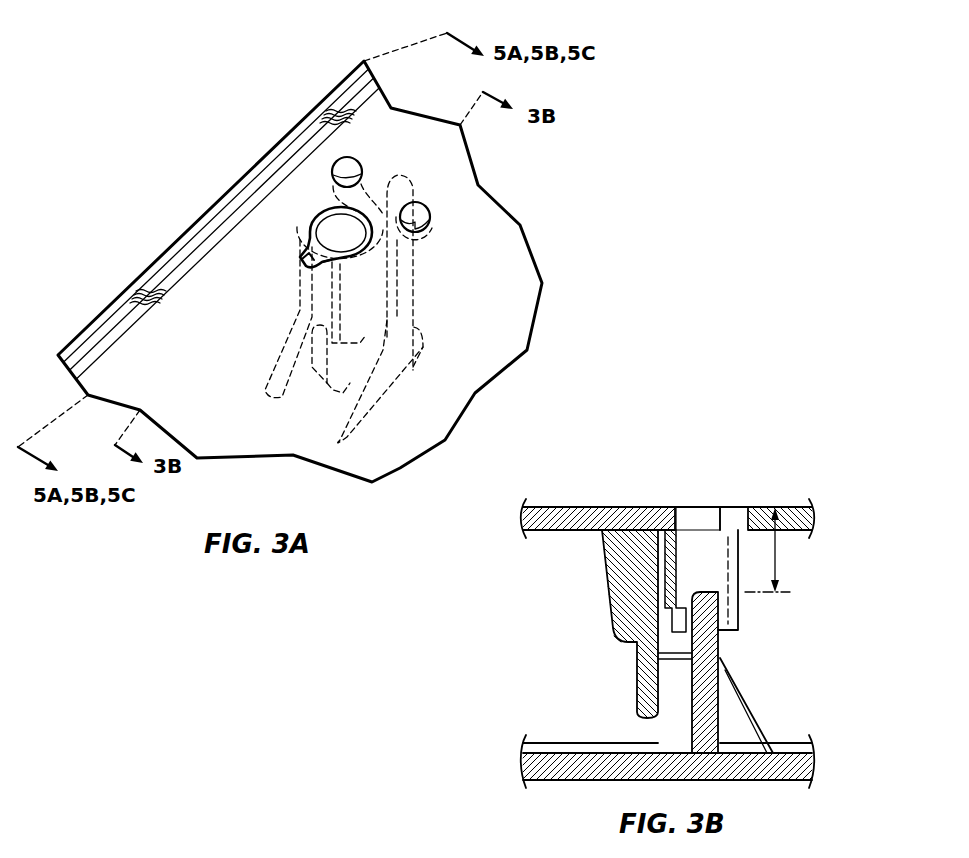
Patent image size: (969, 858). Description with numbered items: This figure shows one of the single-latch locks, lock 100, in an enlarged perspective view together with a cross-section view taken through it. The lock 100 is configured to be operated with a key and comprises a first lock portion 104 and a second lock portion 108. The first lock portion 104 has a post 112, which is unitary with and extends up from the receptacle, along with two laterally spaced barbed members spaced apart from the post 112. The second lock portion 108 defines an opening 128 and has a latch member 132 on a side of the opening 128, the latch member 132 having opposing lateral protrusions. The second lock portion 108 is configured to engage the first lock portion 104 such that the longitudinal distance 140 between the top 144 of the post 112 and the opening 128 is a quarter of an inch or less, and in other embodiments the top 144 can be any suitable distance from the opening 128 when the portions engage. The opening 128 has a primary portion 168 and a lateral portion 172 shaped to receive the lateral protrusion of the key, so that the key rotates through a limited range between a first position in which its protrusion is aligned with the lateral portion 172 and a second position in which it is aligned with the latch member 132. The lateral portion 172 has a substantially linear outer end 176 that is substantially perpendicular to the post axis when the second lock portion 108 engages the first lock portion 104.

In FIG. 3A, the lock 100 is at (250, 97).
In FIG. 3B, the lock 100 is at (714, 462).
In FIG. 3B, the first lock portion 104 is at (772, 703).
In FIG. 3B, the second lock portion 108 is at (616, 497).
In FIG. 3B, the post 112 is at (721, 640).
In FIG. 3A, the opening 128 is at (305, 222).
In FIG. 3B, the opening 128 is at (733, 512).
In FIG. 3A, the latch member 132 is at (418, 283).
In FIG. 3B, the longitudinal distance 140 is at (778, 561).
In FIG. 3B, the top 144 is at (703, 588).
In FIG. 3A, the primary portion 168 is at (357, 215).
In FIG. 3A, the lateral portion 172 is at (300, 248).
In FIG. 3A, the outer end 176 is at (304, 274).